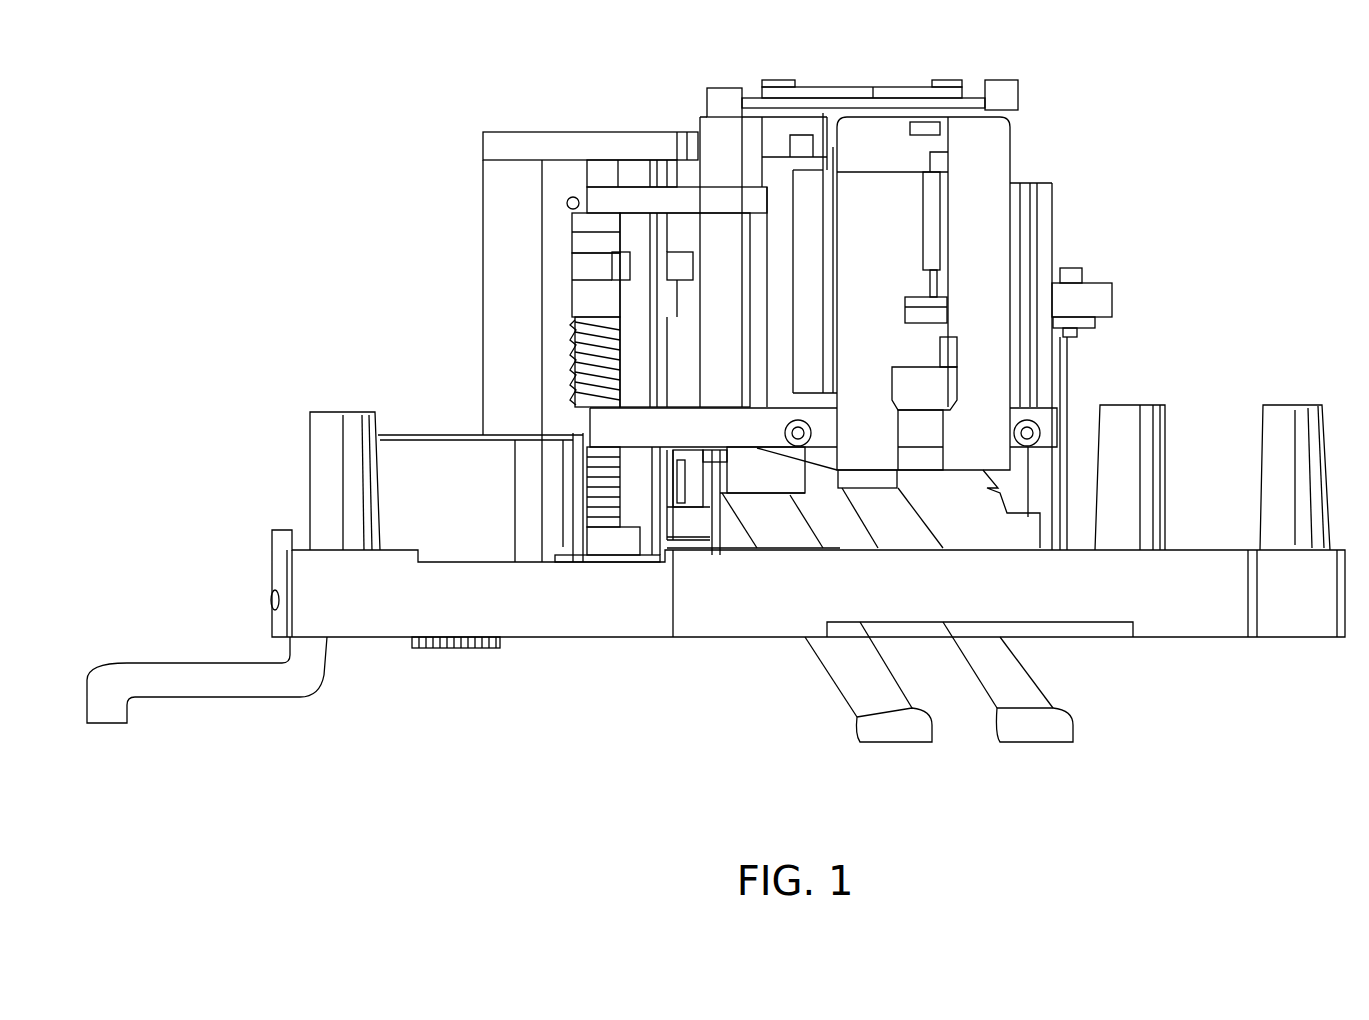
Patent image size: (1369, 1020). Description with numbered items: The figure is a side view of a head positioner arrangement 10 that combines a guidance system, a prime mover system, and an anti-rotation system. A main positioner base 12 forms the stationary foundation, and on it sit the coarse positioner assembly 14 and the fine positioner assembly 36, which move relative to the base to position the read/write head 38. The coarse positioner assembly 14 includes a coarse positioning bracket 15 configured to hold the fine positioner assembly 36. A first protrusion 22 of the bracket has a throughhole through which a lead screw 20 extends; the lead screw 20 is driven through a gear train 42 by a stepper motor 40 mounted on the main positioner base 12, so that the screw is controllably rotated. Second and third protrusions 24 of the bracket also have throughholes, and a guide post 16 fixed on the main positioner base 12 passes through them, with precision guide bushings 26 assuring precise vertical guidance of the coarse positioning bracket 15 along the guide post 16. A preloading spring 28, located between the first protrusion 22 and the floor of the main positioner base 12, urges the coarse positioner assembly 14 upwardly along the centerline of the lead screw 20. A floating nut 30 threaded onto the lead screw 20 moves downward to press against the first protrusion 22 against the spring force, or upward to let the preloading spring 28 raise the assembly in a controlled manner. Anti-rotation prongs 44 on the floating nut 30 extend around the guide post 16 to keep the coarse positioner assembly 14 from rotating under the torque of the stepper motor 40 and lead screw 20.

The head positioner arrangement 10 is at (1185, 123).
The main positioner base 12 is at (548, 612).
The coarse positioner assembly 14 is at (778, 530).
The coarse positioning bracket 15 is at (753, 380).
The guide post 16 is at (643, 507).
The lead screw 20 is at (575, 385).
The first protrusion 22 is at (590, 293).
The second and third protrusions 24 is at (627, 198).
The precision guide bushings 26 is at (640, 182).
The preloading spring 28 is at (573, 347).
The floating nut 30 is at (583, 242).
The fine positioner assembly 36 is at (893, 130).
The read/write head 38 is at (995, 213).
The stepper motor 40 is at (410, 448).
The gear train 42 is at (444, 648).
The anti-rotation prongs 44 is at (685, 260).